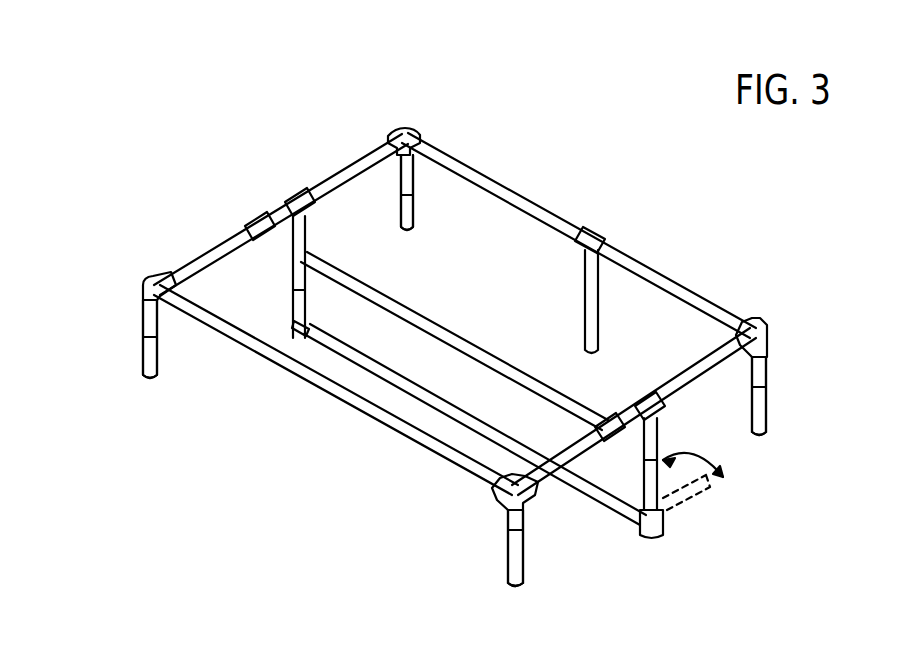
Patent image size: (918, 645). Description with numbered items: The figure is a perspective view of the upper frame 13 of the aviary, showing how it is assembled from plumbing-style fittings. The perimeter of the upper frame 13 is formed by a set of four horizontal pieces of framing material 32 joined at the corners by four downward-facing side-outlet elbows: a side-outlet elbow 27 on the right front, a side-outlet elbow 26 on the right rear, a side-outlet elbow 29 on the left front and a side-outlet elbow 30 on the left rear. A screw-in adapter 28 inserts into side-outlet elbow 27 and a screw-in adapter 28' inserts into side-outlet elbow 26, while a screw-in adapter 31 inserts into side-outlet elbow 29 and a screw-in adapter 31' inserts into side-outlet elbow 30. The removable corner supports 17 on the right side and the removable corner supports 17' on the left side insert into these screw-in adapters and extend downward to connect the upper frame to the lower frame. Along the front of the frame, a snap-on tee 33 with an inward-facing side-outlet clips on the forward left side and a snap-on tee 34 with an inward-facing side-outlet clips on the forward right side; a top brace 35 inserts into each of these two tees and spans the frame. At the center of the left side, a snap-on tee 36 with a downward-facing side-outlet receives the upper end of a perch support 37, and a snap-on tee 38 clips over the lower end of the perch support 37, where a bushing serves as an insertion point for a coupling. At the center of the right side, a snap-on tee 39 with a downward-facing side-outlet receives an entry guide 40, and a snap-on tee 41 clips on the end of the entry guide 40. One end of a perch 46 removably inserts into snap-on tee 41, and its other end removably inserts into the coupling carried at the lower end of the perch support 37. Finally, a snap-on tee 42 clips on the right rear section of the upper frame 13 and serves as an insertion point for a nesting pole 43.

The upper frame 13 is at (510, 138).
The removable corner support 17 is at (659, 501).
The removable corner support 17' is at (259, 287).
The downward-facing side-outlet elbow 26 is at (770, 330).
The downward-facing side-outlet elbow 27 is at (507, 493).
The screw-in adapter 28 is at (464, 562).
The screw-in adapter 28' is at (806, 396).
The downward-facing side-outlet elbow 29 is at (152, 280).
The downward-facing side-outlet elbow 30 is at (407, 130).
The screw-in adapter 31 is at (108, 339).
The screw-in adapter 31' is at (361, 151).
The horizontal pieces of framing material 32 is at (323, 192).
The snap-on tee 33 is at (242, 224).
The snap-on tee 34 is at (603, 415).
The top brace 35 is at (463, 338).
The snap-on tee 36 is at (290, 200).
The perch support 37 is at (306, 292).
The snap-on tee 38 is at (292, 330).
The snap-on tee 39 is at (651, 403).
The entry guide 40 is at (652, 440).
The snap-on tee 41 is at (643, 533).
The snap-on tee 42 is at (603, 232).
The nesting pole 43 is at (586, 300).
The perch 46 is at (367, 352).